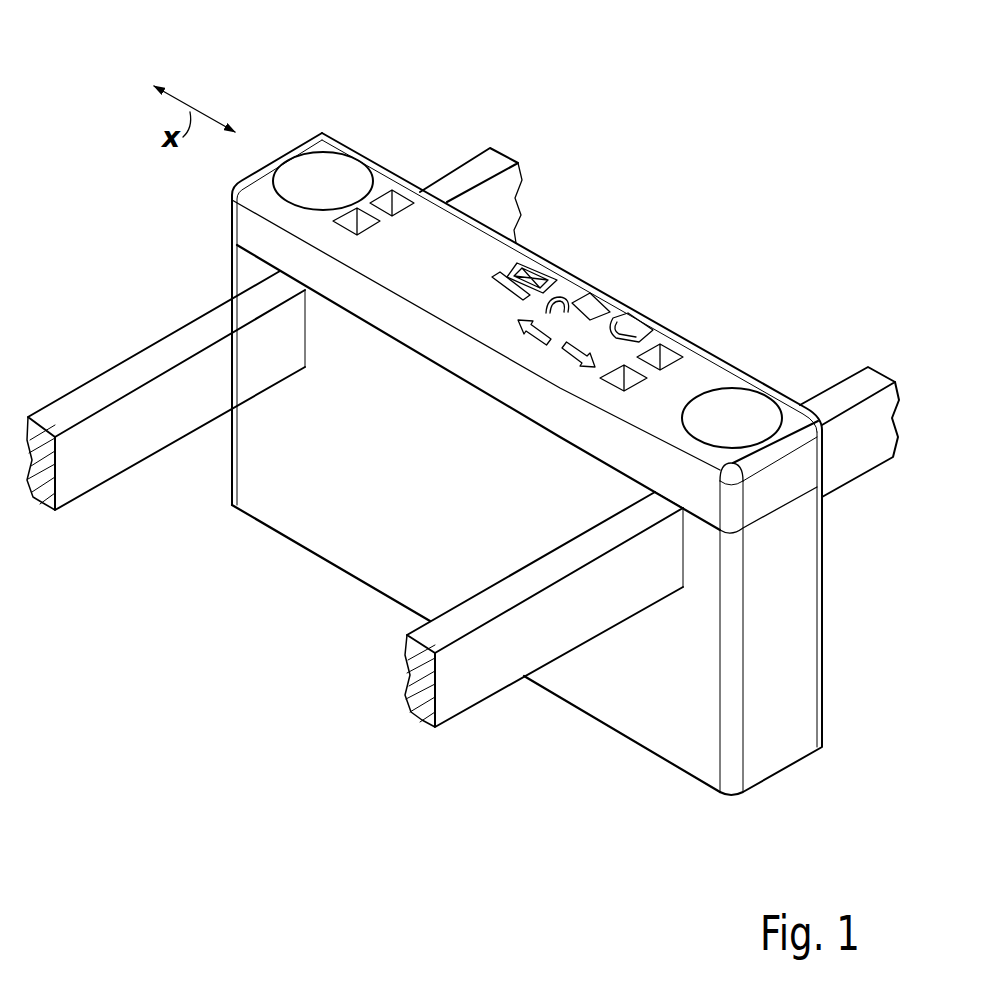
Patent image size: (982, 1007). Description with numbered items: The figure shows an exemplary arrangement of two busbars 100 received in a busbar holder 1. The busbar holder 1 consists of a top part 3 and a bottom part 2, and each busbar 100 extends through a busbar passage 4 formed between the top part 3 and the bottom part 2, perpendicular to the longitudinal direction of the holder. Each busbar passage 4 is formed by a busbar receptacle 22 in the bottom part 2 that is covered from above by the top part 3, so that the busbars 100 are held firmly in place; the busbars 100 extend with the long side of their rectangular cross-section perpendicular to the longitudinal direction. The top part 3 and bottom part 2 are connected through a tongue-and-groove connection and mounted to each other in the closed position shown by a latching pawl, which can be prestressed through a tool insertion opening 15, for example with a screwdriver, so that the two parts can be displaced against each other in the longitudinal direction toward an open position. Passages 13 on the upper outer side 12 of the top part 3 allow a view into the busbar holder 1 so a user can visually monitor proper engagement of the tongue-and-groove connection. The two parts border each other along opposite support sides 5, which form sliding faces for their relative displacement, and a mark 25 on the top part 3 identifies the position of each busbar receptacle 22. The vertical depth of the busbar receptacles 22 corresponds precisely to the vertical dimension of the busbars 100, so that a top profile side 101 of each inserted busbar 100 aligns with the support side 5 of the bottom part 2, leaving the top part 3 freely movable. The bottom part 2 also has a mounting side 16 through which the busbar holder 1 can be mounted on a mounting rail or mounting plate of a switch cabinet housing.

The busbar holder 1 is at (296, 70).
The bottom part 2 is at (782, 740).
The top part 3 is at (694, 372).
The busbar passage 4 is at (301, 368).
The support side 5 is at (228, 240).
The upper outer side 12 is at (718, 384).
The passages 13 is at (396, 202).
The tool insertion opening 15 is at (536, 272).
The mounting side 16 is at (545, 695).
The busbar receptacle 22 is at (308, 349).
The mark 25 is at (318, 180).
The busbar 100 is at (503, 198).
The top profile side 101 is at (488, 165).